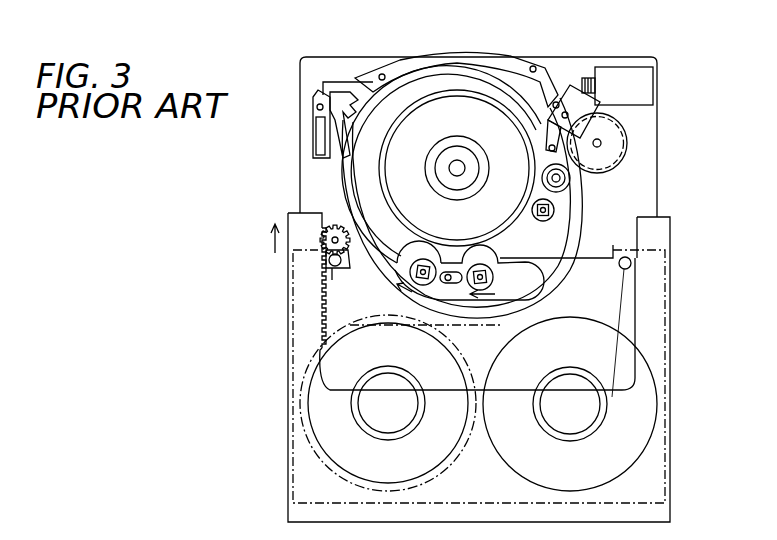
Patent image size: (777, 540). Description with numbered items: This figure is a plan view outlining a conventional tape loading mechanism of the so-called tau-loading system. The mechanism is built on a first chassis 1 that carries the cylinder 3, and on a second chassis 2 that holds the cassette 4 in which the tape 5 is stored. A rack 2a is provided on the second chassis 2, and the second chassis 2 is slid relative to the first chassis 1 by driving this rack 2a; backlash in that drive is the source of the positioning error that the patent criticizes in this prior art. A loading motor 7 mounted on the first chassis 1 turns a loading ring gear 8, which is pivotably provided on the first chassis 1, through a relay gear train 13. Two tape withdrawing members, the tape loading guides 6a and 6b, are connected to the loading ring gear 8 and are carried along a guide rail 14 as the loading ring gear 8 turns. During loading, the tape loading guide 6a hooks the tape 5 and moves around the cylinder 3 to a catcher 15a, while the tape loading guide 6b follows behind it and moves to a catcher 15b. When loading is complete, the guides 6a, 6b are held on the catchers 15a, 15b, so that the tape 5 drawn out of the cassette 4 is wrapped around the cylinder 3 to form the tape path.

The first chassis 1 is at (343, 60).
The second chassis 2 is at (660, 518).
The rack 2a is at (320, 272).
The cylinder 3 is at (462, 63).
The cassette 4 is at (658, 467).
The tape 5 is at (597, 262).
The tape loading guide 6a is at (427, 259).
The tape loading guide 6b is at (483, 264).
The loading motor 7 is at (624, 67).
The loading ring gear 8 is at (580, 190).
The relay gear train 13 is at (627, 127).
The guide rail 14 is at (337, 180).
The catcher 15a is at (552, 70).
The catcher 15b is at (322, 90).